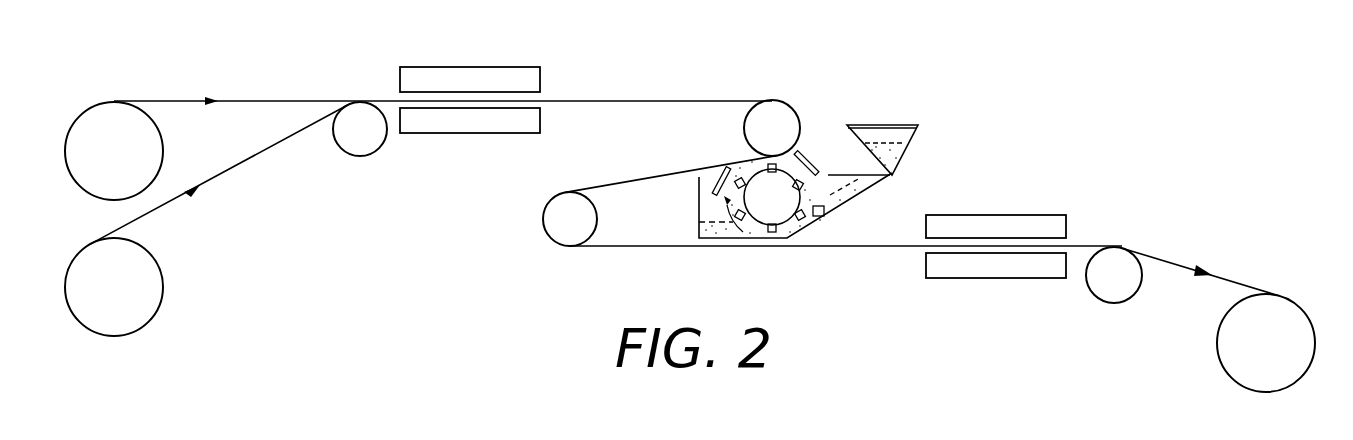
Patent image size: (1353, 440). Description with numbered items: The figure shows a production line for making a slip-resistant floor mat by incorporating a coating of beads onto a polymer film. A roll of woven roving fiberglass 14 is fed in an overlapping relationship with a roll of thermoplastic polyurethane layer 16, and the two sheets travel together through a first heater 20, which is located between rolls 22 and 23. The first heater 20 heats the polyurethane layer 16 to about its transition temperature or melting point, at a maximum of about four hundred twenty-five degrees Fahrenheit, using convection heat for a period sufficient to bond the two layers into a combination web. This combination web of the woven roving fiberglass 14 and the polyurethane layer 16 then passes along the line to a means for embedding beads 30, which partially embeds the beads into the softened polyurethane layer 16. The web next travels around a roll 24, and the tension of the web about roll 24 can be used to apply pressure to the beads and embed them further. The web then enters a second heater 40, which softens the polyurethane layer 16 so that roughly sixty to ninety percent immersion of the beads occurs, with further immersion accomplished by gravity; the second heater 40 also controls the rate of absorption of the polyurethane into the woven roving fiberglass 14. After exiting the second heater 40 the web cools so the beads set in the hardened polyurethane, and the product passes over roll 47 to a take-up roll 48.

The woven roving fiberglass 14 is at (218, 175).
The thermoplastic polyurethane layer 16 is at (253, 101).
The first heater 20 is at (468, 67).
The roll 22 is at (358, 133).
The roll 23 is at (771, 110).
The roll 24 is at (573, 220).
The means for embedding beads 30 is at (866, 108).
The second heater 40 is at (1047, 196).
The roll 47 is at (1115, 275).
The take-up roll 48 is at (1261, 360).